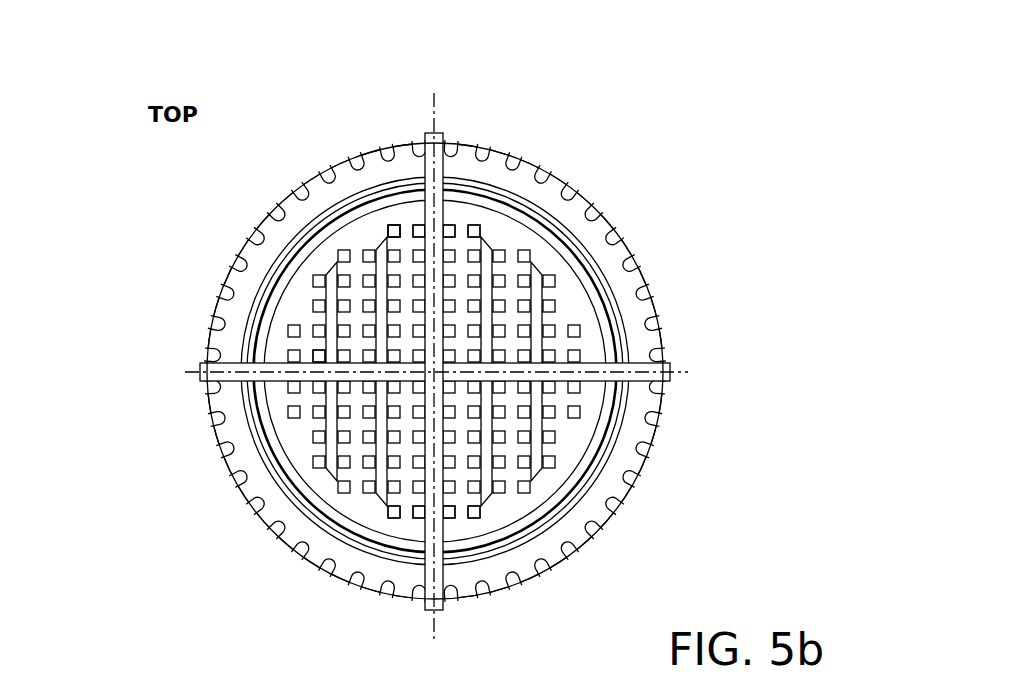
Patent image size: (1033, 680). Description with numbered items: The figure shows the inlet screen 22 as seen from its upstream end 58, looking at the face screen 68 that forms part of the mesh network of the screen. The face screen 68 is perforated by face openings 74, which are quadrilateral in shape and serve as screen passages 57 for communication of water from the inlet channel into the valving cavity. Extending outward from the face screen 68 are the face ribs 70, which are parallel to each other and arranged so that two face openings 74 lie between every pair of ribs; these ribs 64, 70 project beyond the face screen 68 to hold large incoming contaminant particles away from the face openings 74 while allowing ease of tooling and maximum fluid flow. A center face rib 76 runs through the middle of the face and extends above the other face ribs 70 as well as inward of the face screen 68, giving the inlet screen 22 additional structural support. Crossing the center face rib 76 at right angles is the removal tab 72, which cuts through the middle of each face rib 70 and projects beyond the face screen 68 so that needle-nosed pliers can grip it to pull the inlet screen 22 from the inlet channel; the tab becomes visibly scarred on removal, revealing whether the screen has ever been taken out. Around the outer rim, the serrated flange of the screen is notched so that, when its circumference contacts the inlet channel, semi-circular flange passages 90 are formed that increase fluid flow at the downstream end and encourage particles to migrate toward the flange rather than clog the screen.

The inlet screen 22 is at (145, 372).
The screen passages 57 is at (435, 334).
The upstream end 58 is at (657, 262).
The ribs 64 is at (536, 440).
The face screen 68 is at (510, 268).
The face ribs 70 is at (598, 371).
The removal tab 72 is at (325, 374).
The face openings 74 is at (392, 230).
The center face rib 76 is at (436, 267).
The flange passages 90 is at (436, 386).